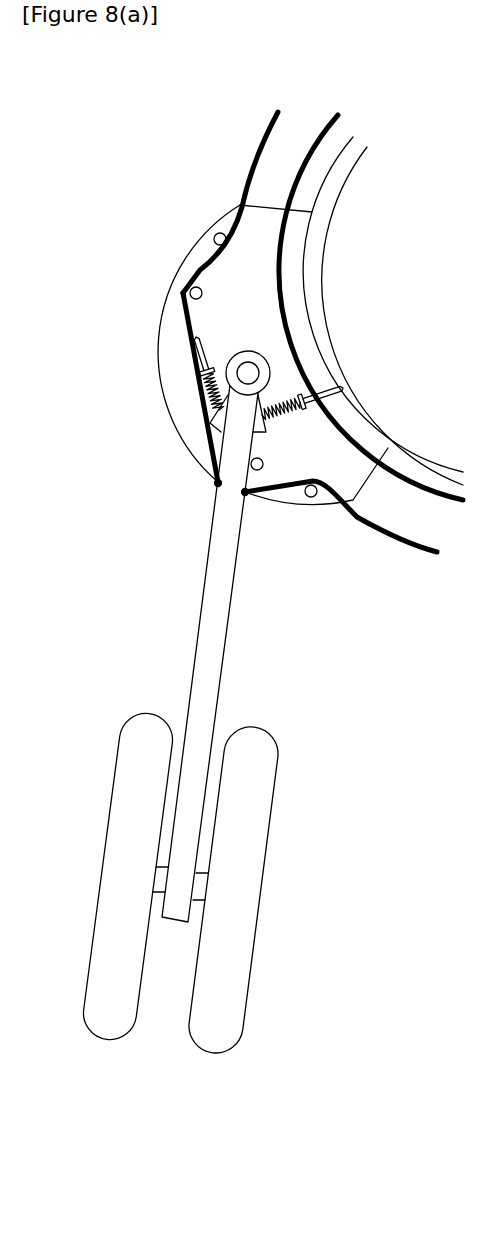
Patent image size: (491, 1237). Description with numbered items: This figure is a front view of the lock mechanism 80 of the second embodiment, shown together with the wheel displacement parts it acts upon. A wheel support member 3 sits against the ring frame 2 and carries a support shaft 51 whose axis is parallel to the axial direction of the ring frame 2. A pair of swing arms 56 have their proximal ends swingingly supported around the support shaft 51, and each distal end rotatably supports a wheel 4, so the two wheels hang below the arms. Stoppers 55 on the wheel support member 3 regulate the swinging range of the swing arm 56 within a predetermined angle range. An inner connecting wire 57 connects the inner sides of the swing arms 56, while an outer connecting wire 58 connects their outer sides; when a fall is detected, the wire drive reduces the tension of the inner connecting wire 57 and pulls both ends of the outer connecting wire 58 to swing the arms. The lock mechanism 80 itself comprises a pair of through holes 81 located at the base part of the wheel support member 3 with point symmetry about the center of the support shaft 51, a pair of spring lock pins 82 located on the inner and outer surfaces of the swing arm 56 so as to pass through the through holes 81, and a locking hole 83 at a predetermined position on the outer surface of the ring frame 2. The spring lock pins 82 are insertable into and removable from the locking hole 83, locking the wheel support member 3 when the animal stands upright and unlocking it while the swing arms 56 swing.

The ring frame 2 is at (325, 240).
The wheel support member 3 is at (217, 217).
The wheel 4 is at (122, 733).
The support shaft 51 is at (245, 363).
The stopper 55 is at (200, 287).
The swing arm 56 is at (199, 607).
The inner connecting wire 57 is at (362, 520).
The outer connecting wire 58 is at (337, 117).
The lock mechanism 80 is at (108, 230).
The through hole 81 is at (300, 395).
The spring lock pin 82 is at (193, 360).
The locking hole 83 is at (340, 388).